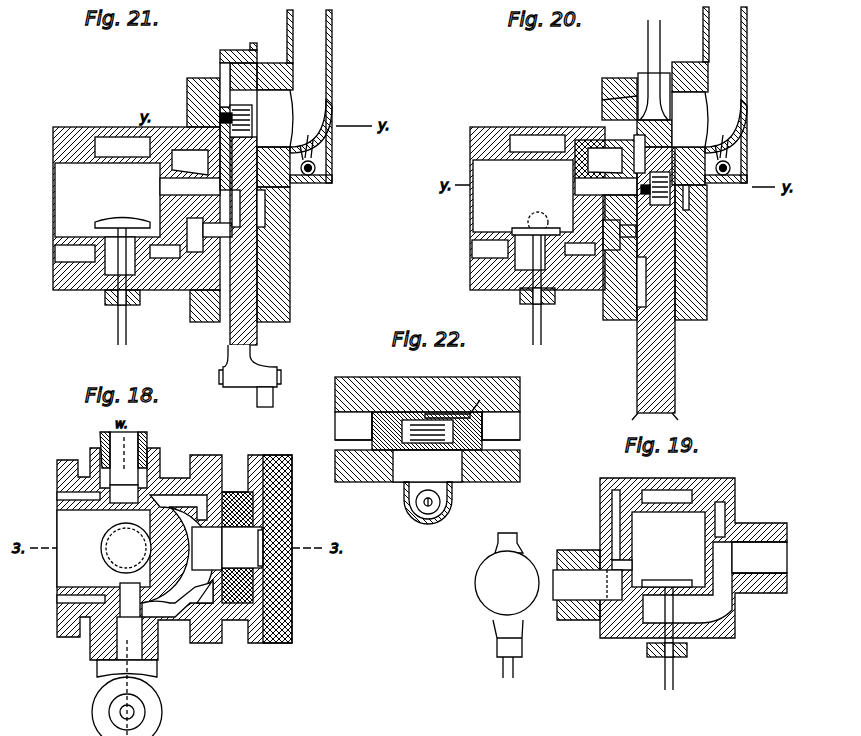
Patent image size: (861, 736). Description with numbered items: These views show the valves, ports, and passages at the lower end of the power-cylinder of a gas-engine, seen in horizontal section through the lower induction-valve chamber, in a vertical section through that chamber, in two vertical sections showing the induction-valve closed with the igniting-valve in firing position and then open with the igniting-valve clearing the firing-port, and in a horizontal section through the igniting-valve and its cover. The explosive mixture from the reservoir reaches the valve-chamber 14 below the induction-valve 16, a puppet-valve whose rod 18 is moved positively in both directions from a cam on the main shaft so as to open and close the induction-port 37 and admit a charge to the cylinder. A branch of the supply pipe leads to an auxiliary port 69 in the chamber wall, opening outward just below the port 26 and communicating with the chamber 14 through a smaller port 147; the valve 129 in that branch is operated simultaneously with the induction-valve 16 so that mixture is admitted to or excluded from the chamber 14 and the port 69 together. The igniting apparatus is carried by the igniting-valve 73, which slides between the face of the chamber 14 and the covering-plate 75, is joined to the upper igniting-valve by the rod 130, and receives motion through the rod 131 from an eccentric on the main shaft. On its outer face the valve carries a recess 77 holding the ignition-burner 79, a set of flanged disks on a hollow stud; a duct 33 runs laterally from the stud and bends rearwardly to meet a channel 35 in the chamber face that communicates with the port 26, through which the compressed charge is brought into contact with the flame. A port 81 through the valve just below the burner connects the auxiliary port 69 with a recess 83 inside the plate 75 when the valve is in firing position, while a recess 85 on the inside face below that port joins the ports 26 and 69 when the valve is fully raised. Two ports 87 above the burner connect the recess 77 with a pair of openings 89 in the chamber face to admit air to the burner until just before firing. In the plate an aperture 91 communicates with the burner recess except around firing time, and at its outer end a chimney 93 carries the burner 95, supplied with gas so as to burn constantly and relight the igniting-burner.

In FIG. 21, the valve-chamber 14 is at (136, 208).
In FIG. 20, the valve-chamber 14 is at (537, 208).
In FIG. 18, the valve-chamber 14 is at (174, 546).
In FIG. 19, the valve-chamber 14 is at (693, 558).
In FIG. 21, the induction-valve 16 is at (135, 222).
In FIG. 20, the induction-valve 16 is at (520, 228).
In FIG. 18, the induction-valve 16 is at (100, 553).
In FIG. 19, the induction-valve 16 is at (672, 580).
In FIG. 21, the rod 18 is at (126, 315).
In FIG. 20, the rod 18 is at (541, 312).
In FIG. 19, the rod 18 is at (673, 672).
In FIG. 21, the port 26 is at (190, 173).
In FIG. 20, the port 26 is at (606, 187).
In FIG. 21, the duct 33 is at (242, 142).
In FIG. 20, the duct 33 is at (661, 211).
In FIG. 22, the duct 33 is at (440, 414).
In FIG. 22, the channel 35 is at (482, 401).
In FIG. 21, the induction-port 37 is at (120, 256).
In FIG. 20, the induction-port 37 is at (530, 251).
In FIG. 18, the induction-port 37 is at (124, 494).
In FIG. 19, the induction-port 37 is at (685, 598).
In FIG. 21, the auxiliary port 69 is at (209, 235).
In FIG. 20, the auxiliary port 69 is at (619, 235).
In FIG. 18, the auxiliary port 69 is at (182, 556).
In FIG. 19, the auxiliary port 69 is at (587, 585).
In FIG. 21, the igniting-valve 73 is at (250, 262).
In FIG. 20, the igniting-valve 73 is at (655, 277).
In FIG. 22, the igniting-valve 73 is at (427, 431).
In FIG. 18, the igniting-valve 73 is at (237, 547).
In FIG. 21, the covering-plate 75 is at (240, 182).
In FIG. 20, the covering-plate 75 is at (655, 191).
In FIG. 22, the covering-plate 75 is at (427, 429).
In FIG. 18, the covering-plate 75 is at (292, 512).
In FIG. 21, the recess 77 is at (241, 116).
In FIG. 20, the recess 77 is at (670, 170).
In FIG. 22, the recess 77 is at (447, 443).
In FIG. 21, the ignition-burner 79 is at (252, 110).
In FIG. 20, the ignition-burner 79 is at (652, 177).
In FIG. 21, the port 81 is at (273, 167).
In FIG. 20, the port 81 is at (677, 197).
In FIG. 18, the port 81 is at (242, 547).
In FIG. 21, the recess 83 is at (272, 213).
In FIG. 20, the recess 83 is at (691, 199).
In FIG. 18, the recess 83 is at (258, 560).
In FIG. 21, the recess 85 is at (243, 213).
In FIG. 20, the recess 85 is at (636, 283).
In FIG. 21, the ports 87 is at (222, 85).
In FIG. 20, the ports 87 is at (606, 160).
In FIG. 21, the openings 89 is at (203, 102).
In FIG. 20, the openings 89 is at (619, 99).
In FIG. 21, the aperture 91 is at (275, 118).
In FIG. 20, the aperture 91 is at (690, 119).
In FIG. 22, the aperture 91 is at (427, 466).
In FIG. 21, the chimney 93 is at (294, 96).
In FIG. 20, the chimney 93 is at (725, 95).
In FIG. 22, the chimney 93 is at (450, 503).
In FIG. 21, the burner 95 is at (315, 160).
In FIG. 20, the burner 95 is at (730, 162).
In FIG. 22, the burner 95 is at (416, 502).
In FIG. 18, the valve 129 is at (127, 688).
In FIG. 19, the valve 129 is at (507, 605).
In FIG. 20, the rod 130 is at (645, 36).
In FIG. 21, the rod 131 is at (273, 400).
In FIG. 20, the port 147 is at (540, 213).
In FIG. 18, the port 147 is at (120, 588).